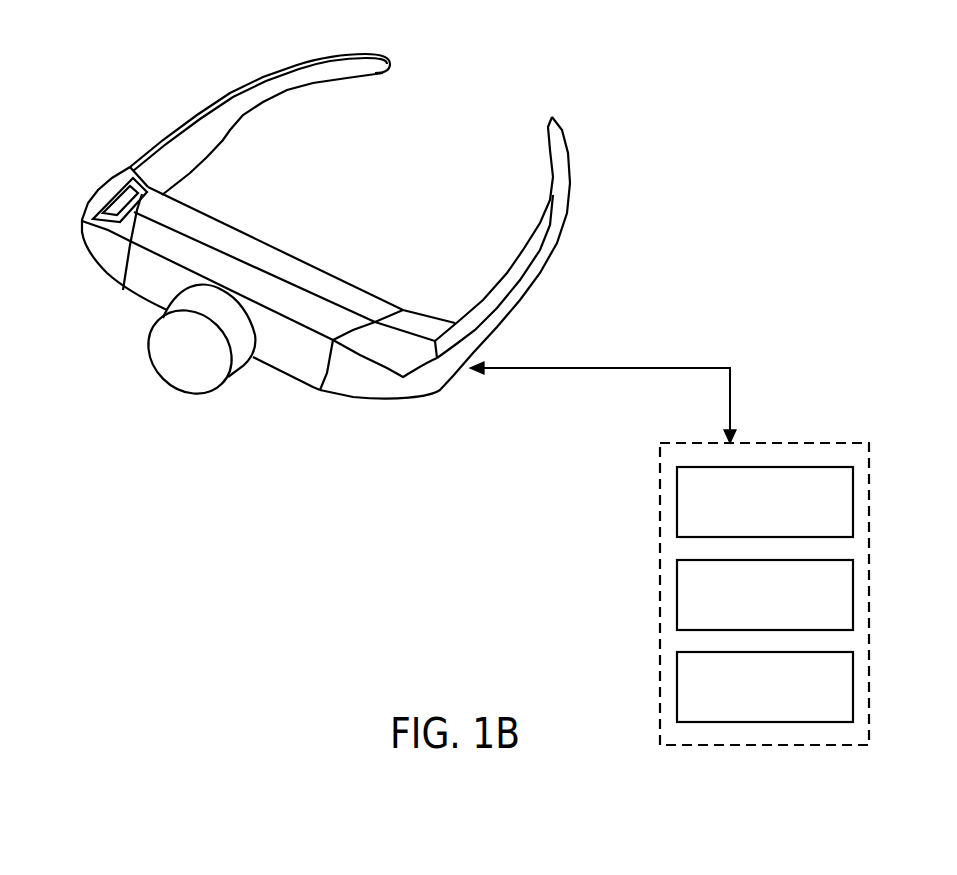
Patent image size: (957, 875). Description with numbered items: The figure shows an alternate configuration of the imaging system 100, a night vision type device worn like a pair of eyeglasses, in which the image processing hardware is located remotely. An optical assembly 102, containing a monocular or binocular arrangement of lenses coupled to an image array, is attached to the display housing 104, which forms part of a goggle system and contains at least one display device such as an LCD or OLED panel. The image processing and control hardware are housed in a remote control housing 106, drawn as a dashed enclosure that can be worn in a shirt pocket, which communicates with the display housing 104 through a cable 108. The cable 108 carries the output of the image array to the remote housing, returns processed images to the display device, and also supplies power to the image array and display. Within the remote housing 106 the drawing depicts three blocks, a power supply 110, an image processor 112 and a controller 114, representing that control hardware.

The imaging system 100 is at (112, 99).
The optical assembly 102 is at (149, 343).
The display housing 104 is at (255, 235).
The remote control housing 106 is at (773, 443).
The cable 108 is at (618, 367).
The power supply 110 is at (677, 502).
The image processor 112 is at (677, 598).
The controller 114 is at (677, 690).